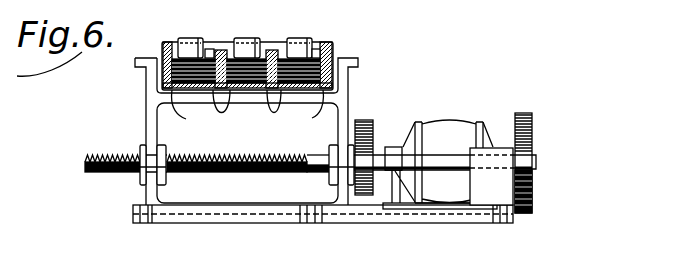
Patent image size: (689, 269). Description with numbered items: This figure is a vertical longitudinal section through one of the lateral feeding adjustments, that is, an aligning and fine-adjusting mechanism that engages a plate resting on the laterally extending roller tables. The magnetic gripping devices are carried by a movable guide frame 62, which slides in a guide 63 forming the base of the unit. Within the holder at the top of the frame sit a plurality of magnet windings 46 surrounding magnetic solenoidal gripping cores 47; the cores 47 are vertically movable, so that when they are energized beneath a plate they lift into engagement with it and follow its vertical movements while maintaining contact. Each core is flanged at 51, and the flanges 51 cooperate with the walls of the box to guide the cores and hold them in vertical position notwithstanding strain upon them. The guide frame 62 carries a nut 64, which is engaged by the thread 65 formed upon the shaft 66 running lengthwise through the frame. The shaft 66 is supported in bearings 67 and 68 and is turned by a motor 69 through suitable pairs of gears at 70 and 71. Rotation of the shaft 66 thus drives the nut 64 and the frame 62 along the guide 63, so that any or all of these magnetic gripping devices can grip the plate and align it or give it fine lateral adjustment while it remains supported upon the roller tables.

The magnet windings 46 is at (333, 57).
The magnetic solenoidal gripping cores 47 is at (208, 47).
The flanges 51 is at (178, 45).
The movable guide frame 62 is at (343, 108).
The guide 63 is at (355, 221).
The nut 64 is at (167, 145).
The thread 65 is at (258, 173).
The shaft 66 is at (297, 174).
The bearing 67 is at (388, 183).
The bearing 68 is at (493, 148).
The motor 69 is at (453, 127).
The gears 70 is at (532, 140).
The gears 71 is at (366, 194).